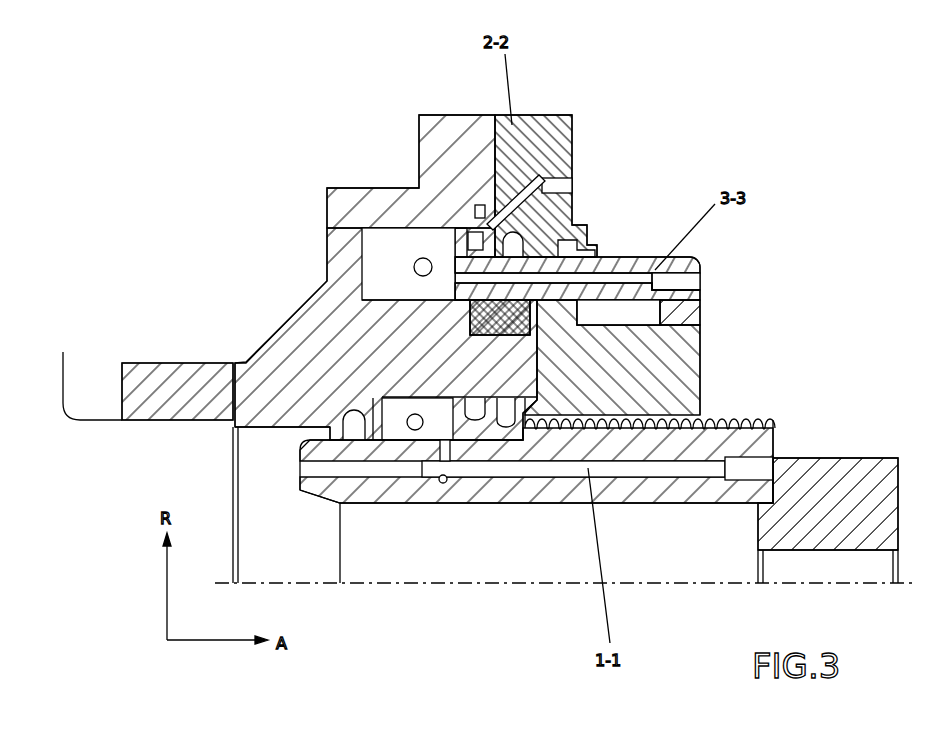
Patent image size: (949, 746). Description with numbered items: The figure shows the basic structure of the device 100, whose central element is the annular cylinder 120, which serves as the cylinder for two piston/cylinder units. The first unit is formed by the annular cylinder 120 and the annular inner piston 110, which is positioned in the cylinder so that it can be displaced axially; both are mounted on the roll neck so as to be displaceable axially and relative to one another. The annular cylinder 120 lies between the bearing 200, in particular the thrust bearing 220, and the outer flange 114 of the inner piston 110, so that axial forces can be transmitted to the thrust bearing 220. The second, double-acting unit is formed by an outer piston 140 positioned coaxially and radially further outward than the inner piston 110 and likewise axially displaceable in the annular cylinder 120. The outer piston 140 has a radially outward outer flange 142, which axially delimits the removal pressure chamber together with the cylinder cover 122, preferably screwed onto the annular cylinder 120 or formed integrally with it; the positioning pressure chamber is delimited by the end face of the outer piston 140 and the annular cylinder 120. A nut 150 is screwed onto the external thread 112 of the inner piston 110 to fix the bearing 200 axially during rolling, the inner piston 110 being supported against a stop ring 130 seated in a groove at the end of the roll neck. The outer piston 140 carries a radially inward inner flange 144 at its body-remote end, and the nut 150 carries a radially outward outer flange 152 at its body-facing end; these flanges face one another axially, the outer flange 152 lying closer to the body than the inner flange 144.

The device 100 is at (487, 349).
The inner piston 110 is at (392, 477).
The external thread 112 is at (775, 418).
The outer flange 114 is at (497, 463).
The annular cylinder 120 is at (435, 137).
The cylinder cover 122 is at (547, 130).
The stop ring 130 is at (858, 458).
The outer piston 140 is at (638, 272).
The outer flange 142 is at (455, 240).
The inner flange 144 is at (692, 313).
The nut 150 is at (685, 348).
The outer flange 152 is at (598, 310).
The bearing 200 is at (183, 395).
The thrust bearing 220 is at (148, 364).